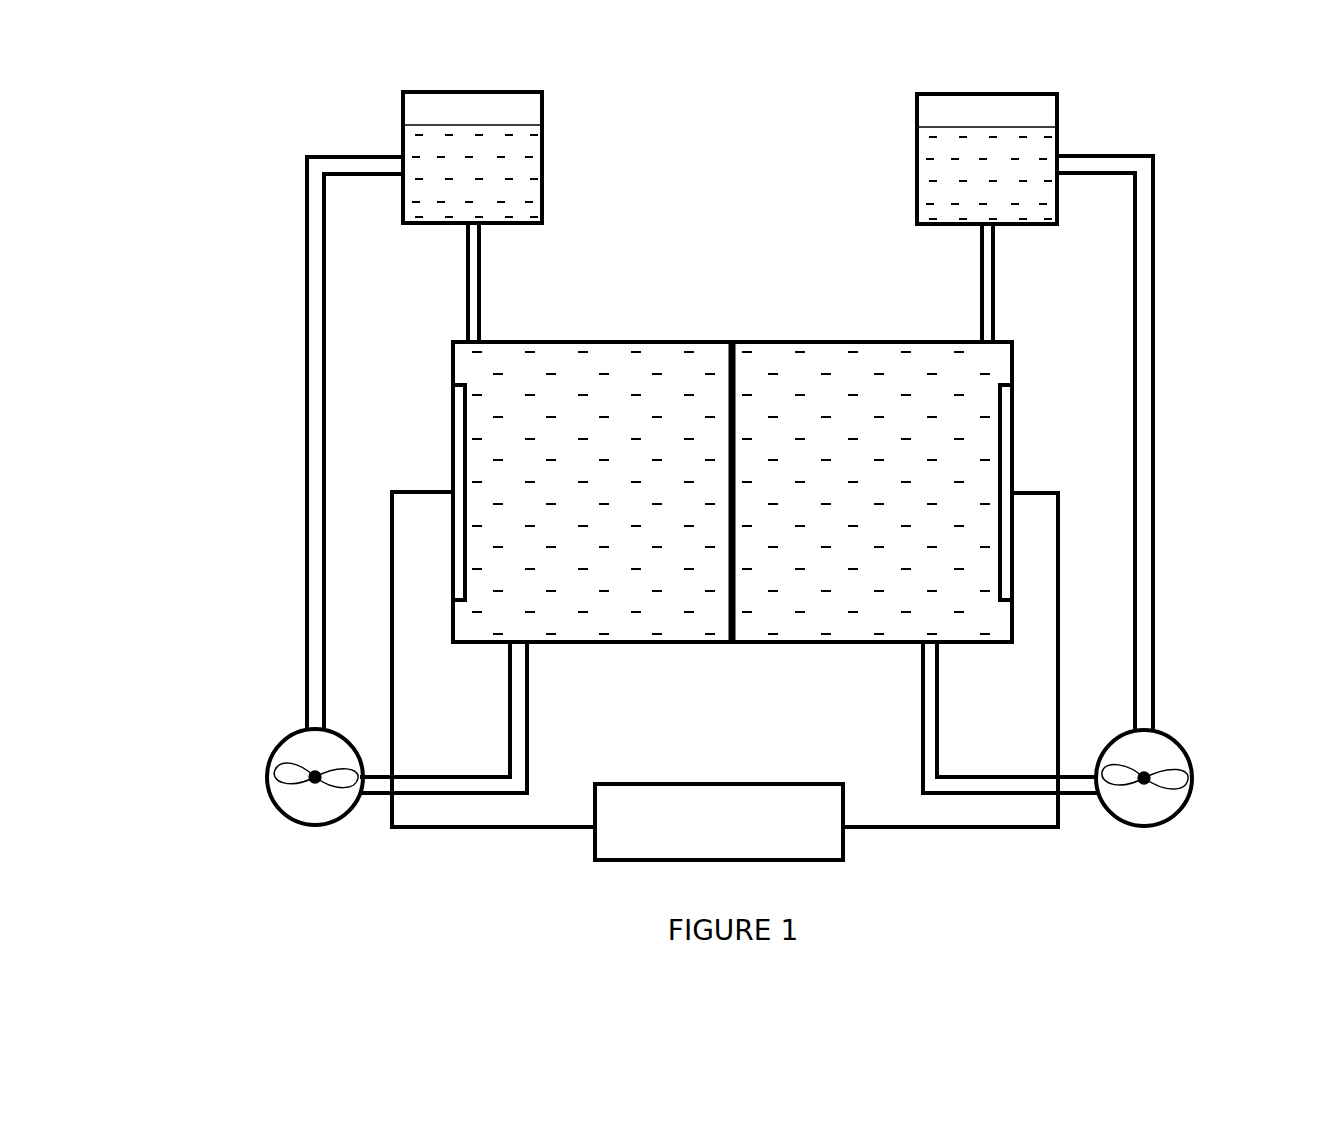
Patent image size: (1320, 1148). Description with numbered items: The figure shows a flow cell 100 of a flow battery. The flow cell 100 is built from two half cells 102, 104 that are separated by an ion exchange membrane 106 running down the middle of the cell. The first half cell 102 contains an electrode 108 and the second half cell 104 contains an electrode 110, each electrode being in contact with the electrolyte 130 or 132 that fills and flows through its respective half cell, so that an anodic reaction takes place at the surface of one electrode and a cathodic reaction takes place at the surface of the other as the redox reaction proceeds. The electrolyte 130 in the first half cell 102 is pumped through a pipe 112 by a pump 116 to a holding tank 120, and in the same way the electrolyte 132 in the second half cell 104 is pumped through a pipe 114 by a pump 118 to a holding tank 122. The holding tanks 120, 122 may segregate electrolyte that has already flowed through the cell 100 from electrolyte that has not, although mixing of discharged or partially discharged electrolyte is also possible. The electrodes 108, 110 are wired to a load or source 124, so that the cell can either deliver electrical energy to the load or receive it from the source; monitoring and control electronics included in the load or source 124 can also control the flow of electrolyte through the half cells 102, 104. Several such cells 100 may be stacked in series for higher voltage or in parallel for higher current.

The flow cell 100 is at (730, 505).
The half cell 102 is at (592, 547).
The half cell 104 is at (872, 450).
The ion exchange membrane 106 is at (740, 620).
The electrode 108 is at (460, 402).
The electrode 110 is at (1003, 417).
The pipe 112 is at (307, 372).
The pipe 114 is at (1154, 437).
The pump 116 is at (280, 748).
The pump 118 is at (1183, 813).
The holding tank 120 is at (544, 112).
The holding tank 122 is at (917, 115).
The load or source 124 is at (580, 851).
The electrolyte 130 is at (593, 620).
The electrolyte 132 is at (850, 377).